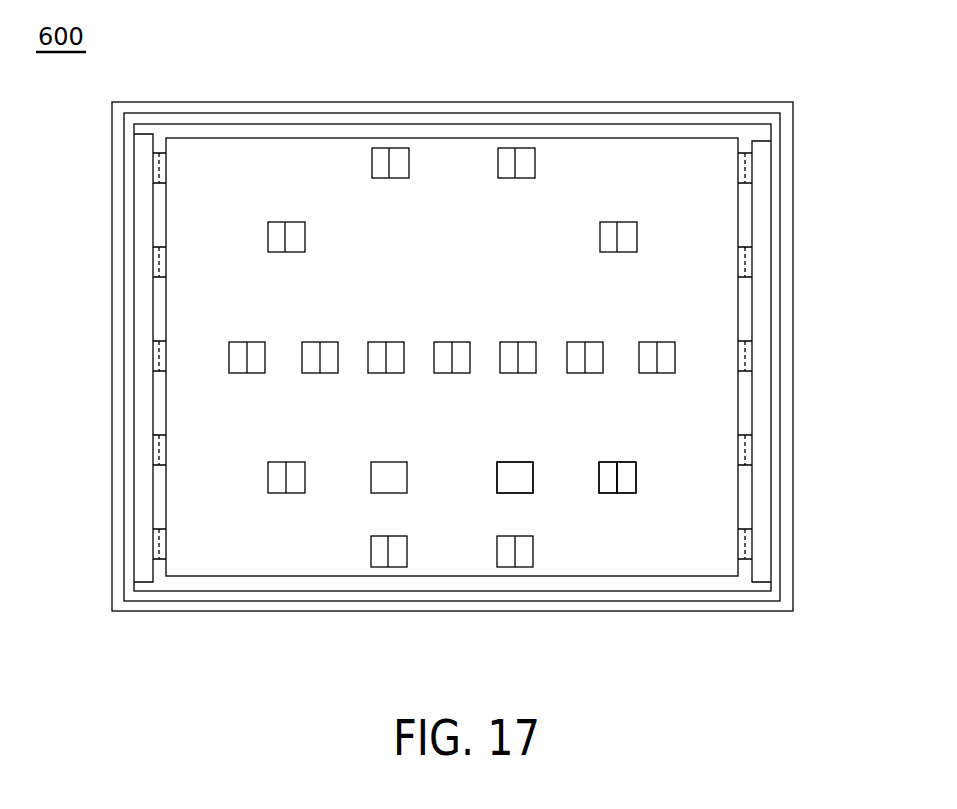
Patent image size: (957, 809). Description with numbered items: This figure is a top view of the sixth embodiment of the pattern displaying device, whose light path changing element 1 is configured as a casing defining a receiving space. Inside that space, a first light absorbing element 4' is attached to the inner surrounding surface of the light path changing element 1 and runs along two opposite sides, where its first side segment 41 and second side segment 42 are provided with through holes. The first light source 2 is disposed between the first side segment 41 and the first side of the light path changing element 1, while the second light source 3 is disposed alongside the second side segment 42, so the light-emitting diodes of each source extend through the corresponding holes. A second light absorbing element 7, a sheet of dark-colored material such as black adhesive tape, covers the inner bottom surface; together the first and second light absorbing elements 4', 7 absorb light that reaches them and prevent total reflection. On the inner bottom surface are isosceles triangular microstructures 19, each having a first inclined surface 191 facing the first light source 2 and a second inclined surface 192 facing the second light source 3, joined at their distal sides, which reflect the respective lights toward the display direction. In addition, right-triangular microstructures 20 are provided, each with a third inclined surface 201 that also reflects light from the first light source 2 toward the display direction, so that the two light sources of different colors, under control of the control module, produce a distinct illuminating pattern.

The light path changing element 1 is at (298, 102).
The first light source 2 is at (771, 215).
The second light source 3 is at (133, 203).
The first light absorbing element 4' is at (452, 314).
The second light absorbing element 7 is at (268, 170).
The second side segment 42 is at (160, 293).
The first side segment 41 is at (744, 293).
The microstructures 20 is at (373, 501).
The third inclined surface 201 is at (507, 480).
The microstructures 19 is at (637, 476).
The second inclined surface 192 is at (607, 478).
The first inclined surface 191 is at (630, 483).